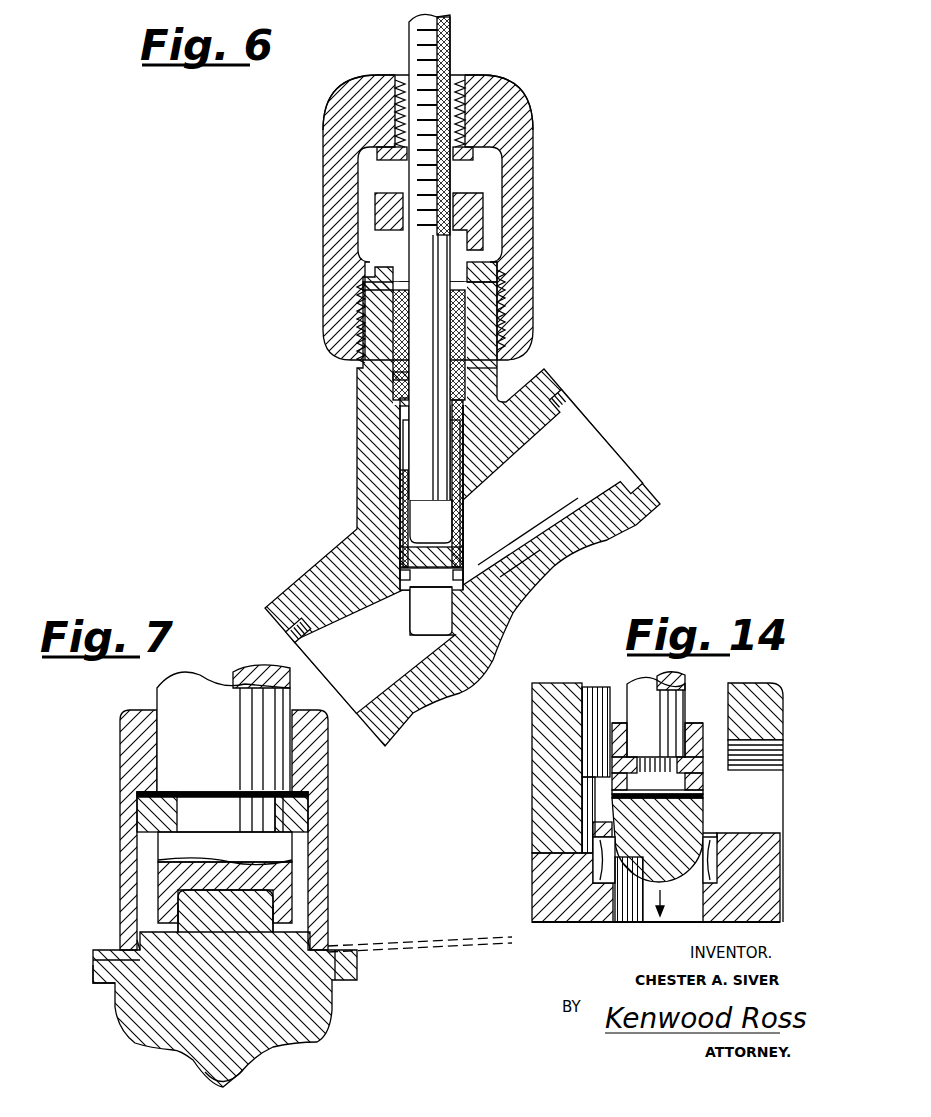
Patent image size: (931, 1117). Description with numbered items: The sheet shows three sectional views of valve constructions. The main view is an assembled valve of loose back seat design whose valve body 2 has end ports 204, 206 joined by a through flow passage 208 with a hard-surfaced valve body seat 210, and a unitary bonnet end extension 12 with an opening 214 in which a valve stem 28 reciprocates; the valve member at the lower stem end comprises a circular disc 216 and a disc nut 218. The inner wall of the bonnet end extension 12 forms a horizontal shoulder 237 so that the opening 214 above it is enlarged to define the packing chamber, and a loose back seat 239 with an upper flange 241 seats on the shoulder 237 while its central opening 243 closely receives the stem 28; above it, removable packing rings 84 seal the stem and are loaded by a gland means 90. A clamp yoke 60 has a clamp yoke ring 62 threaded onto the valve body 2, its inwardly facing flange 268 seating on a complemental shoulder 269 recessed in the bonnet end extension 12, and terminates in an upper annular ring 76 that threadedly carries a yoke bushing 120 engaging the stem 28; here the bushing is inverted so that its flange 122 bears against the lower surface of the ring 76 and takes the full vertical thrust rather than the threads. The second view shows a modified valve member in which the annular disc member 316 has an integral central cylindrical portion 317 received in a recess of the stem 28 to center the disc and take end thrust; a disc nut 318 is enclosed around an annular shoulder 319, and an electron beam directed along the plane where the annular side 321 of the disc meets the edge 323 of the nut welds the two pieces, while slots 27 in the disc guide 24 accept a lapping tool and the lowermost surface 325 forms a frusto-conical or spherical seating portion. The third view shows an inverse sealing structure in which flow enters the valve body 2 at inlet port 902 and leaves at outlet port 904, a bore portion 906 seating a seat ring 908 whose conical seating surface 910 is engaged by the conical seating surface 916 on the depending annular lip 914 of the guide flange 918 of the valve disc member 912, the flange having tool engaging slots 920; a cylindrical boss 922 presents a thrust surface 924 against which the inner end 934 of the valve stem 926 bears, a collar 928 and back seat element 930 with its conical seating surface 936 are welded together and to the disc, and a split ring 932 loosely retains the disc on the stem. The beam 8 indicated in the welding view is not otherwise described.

In FIG. 6, the valve body 2 is at (483, 652).
In FIG. 14, the valve body 2 is at (533, 894).
In FIG. 7, the section line 8 is at (470, 935).
In FIG. 6, the bonnet end extension 12 is at (367, 428).
In FIG. 7, the disc guide 24 is at (95, 975).
In FIG. 7, the slots 27 is at (100, 956).
In FIG. 6, the valve stem 28 is at (450, 31).
In FIG. 7, the valve stem 28 is at (228, 742).
In FIG. 6, the clamp yoke 60 is at (287, 141).
In FIG. 6, the clamp yoke ring 62 is at (330, 322).
In FIG. 6, the upper annular ring 76 is at (340, 118).
In FIG. 6, the packing rings 84 is at (409, 294).
In FIG. 6, the gland means 90 is at (383, 196).
In FIG. 6, the yoke bushing 120 is at (490, 85).
In FIG. 6, the flange 122 is at (466, 160).
In FIG. 6, the end port 204 is at (335, 665).
In FIG. 6, the end port 206 is at (587, 450).
In FIG. 6, the through flow passage 208 is at (445, 630).
In FIG. 6, the valve body seat 210 is at (460, 578).
In FIG. 6, the opening 214 is at (403, 455).
In FIG. 6, the circular disc 216 is at (431, 575).
In FIG. 6, the disc nut 218 is at (400, 487).
In FIG. 6, the shoulder 237 is at (393, 376).
In FIG. 6, the loose back seat 239 is at (400, 402).
In FIG. 6, the flange 241 is at (470, 373).
In FIG. 6, the opening 243 is at (410, 388).
In FIG. 6, the flange 268 is at (366, 276).
In FIG. 6, the shoulder 269 is at (500, 275).
In FIG. 7, the disc member 316 is at (313, 1025).
In FIG. 7, the cylindrical portion 317 is at (190, 900).
In FIG. 7, the disc nut 318 is at (137, 805).
In FIG. 7, the annular shoulder 319 is at (311, 938).
In FIG. 7, the annular side 321 is at (133, 948).
In FIG. 7, the edge 323 is at (335, 990).
In FIG. 7, the lowermost surface 325 is at (280, 1046).
In FIG. 14, the inlet port 902 is at (735, 793).
In FIG. 14, the outlet port 904 is at (683, 917).
In FIG. 14, the bore portion 906 is at (710, 880).
In FIG. 14, the seat ring 908 is at (722, 866).
In FIG. 14, the seating surface 910 is at (675, 899).
In FIG. 14, the valve disc member 912 is at (635, 922).
In FIG. 14, the annular lip 914 is at (724, 843).
In FIG. 14, the seating surface 916 is at (593, 858).
In FIG. 14, the guide flange 918 is at (595, 827).
In FIG. 14, the tool engaging slots 920 is at (590, 812).
In FIG. 14, the cylindrical boss 922 is at (620, 793).
In FIG. 14, the thrust surface 924 is at (650, 765).
In FIG. 14, the valve stem 926 is at (621, 695).
In FIG. 14, the collar 928 is at (618, 782).
In FIG. 14, the back seat element 930 is at (622, 740).
In FIG. 14, the split ring 932 is at (622, 765).
In FIG. 14, the inner end 934 is at (706, 796).
In FIG. 14, the seating surface 936 is at (613, 727).